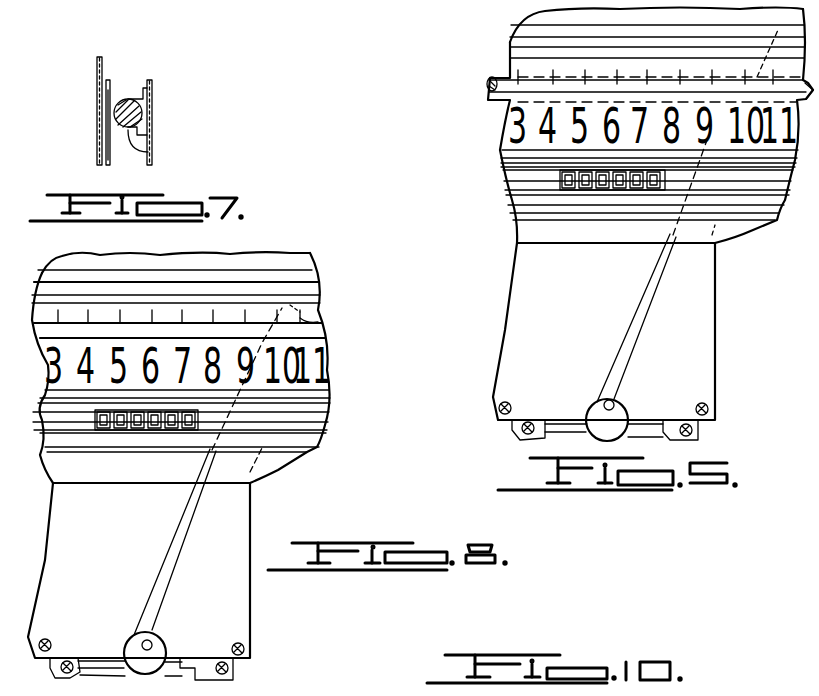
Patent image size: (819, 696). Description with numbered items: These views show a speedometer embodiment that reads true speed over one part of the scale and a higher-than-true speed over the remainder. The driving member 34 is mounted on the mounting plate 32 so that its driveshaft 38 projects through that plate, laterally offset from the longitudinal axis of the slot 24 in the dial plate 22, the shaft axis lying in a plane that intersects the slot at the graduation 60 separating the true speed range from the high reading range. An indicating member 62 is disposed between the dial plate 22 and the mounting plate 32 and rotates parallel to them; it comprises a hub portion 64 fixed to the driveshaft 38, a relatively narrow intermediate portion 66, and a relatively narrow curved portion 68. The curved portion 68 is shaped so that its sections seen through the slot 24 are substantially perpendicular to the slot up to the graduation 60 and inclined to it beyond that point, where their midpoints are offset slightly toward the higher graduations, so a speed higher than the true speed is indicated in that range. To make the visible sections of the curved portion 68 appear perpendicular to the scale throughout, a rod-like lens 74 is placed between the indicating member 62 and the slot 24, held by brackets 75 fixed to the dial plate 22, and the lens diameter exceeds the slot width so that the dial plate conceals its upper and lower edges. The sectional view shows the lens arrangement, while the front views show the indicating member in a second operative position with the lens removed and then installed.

In FIG. 7, the dial plate 22 is at (145, 100).
In FIG. 8, the dial plate 22 is at (300, 294).
In FIG. 7, the slot 24 is at (148, 120).
In FIG. 8, the slot 24 is at (286, 331).
In FIG. 9, the slot 24 is at (508, 80).
In FIG. 7, the mounting plate 32 is at (97, 115).
In FIG. 9, the driving member 34 is at (604, 404).
In FIG. 8, the driveshaft 38 is at (142, 643).
In FIG. 8, the graduation 60 is at (153, 320).
In FIG. 9, the graduation 60 is at (622, 72).
In FIG. 7, the indicating member 62 is at (112, 80).
In FIG. 8, the indicating member 62 is at (170, 557).
In FIG. 9, the indicating member 62 is at (636, 310).
In FIG. 8, the hub portion 64 is at (160, 642).
In FIG. 9, the hub portion 64 is at (590, 412).
In FIG. 8, the intermediate portion 66 is at (183, 523).
In FIG. 9, the intermediate portion 66 is at (652, 278).
In FIG. 7, the curved portion 68 is at (108, 147).
In FIG. 8, the curved portion 68 is at (320, 313).
In FIG. 9, the curved portion 68 is at (716, 14).
In FIG. 7, the rod-like lens 74 is at (153, 156).
In FIG. 9, the rod-like lens 74 is at (488, 92).
In FIG. 7, the brackets 75 is at (136, 98).